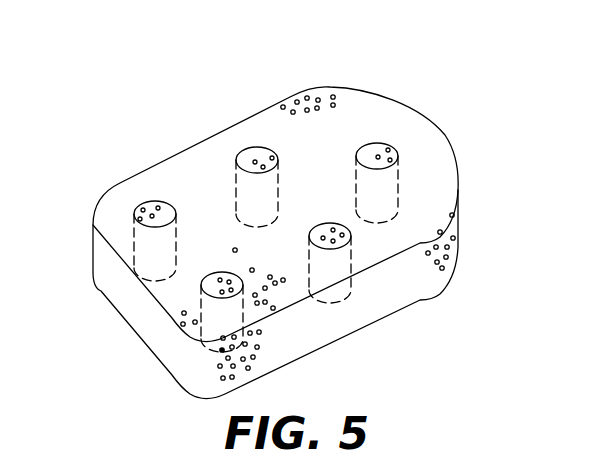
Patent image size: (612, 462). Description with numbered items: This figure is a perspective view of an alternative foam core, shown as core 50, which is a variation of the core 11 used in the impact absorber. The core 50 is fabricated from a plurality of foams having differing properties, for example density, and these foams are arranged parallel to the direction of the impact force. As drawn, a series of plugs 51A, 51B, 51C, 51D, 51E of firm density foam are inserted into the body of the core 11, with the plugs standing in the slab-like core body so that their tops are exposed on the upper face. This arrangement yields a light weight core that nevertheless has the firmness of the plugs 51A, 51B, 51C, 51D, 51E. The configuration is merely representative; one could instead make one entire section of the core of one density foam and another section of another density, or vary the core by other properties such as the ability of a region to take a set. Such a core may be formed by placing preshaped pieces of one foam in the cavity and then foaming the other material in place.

The core 50 is at (203, 130).
The core 11 is at (425, 278).
The plug 51A is at (152, 202).
The plug 51B is at (202, 287).
The plug 51C is at (338, 243).
The plug 51D is at (388, 144).
The plug 51E is at (263, 148).